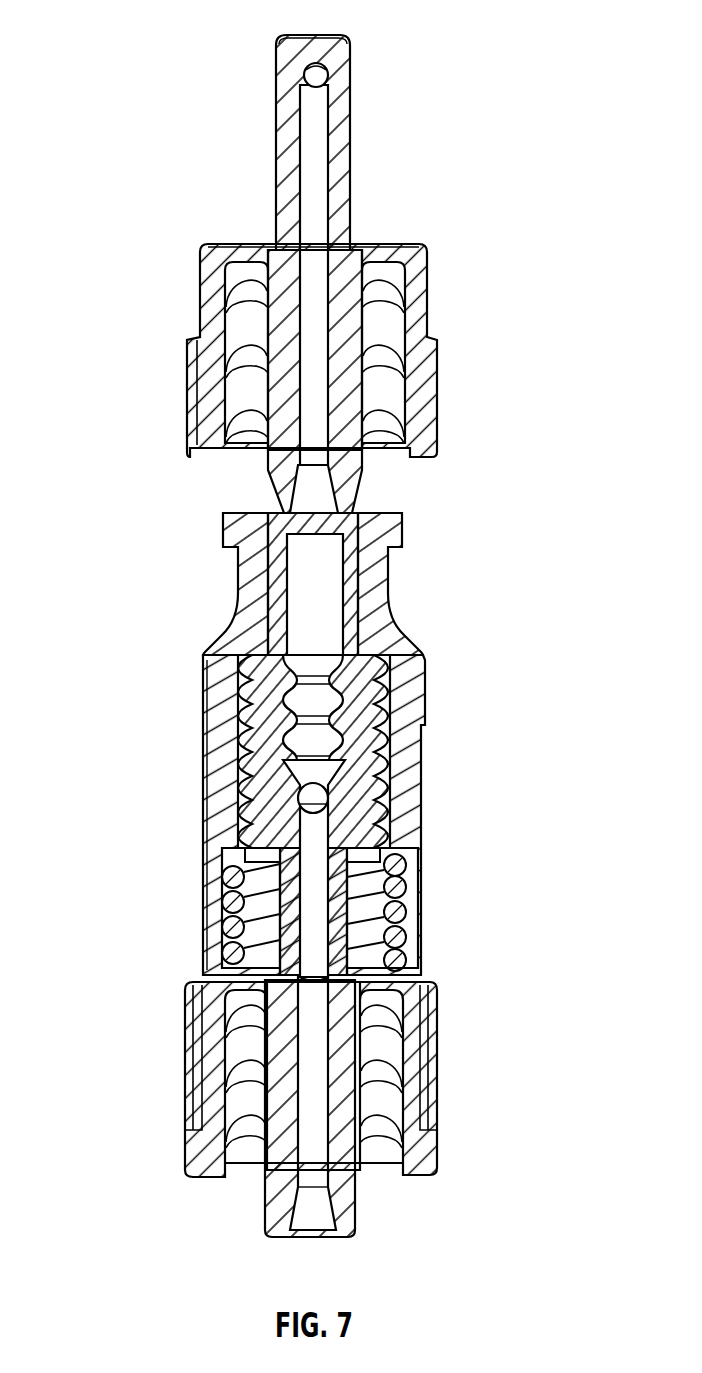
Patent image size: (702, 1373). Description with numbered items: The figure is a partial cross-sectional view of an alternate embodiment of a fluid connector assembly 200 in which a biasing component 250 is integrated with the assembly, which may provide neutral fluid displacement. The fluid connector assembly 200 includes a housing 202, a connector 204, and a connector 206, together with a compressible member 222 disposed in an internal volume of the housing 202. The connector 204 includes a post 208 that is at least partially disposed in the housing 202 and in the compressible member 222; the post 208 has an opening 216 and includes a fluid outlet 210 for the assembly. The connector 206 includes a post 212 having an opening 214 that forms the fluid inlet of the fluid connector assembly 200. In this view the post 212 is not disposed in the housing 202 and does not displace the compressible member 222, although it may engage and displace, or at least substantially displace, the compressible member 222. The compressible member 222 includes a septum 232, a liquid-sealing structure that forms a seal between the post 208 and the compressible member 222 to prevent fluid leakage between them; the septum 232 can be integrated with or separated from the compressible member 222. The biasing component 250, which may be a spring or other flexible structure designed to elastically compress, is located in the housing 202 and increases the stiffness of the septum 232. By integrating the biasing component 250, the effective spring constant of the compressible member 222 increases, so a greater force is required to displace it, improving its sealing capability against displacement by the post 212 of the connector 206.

The fluid connector assembly 200 is at (124, 38).
The housing 202 is at (402, 530).
The connector 204 is at (330, 1078).
The connector 206 is at (503, 312).
The post 208 is at (250, 1100).
The fluid outlet 210 is at (320, 1243).
The post 212 is at (280, 135).
The opening 214 is at (327, 66).
The opening 216 is at (299, 803).
The compressible member 222 is at (357, 622).
The septum 232 is at (400, 853).
The biasing component 250 is at (222, 905).